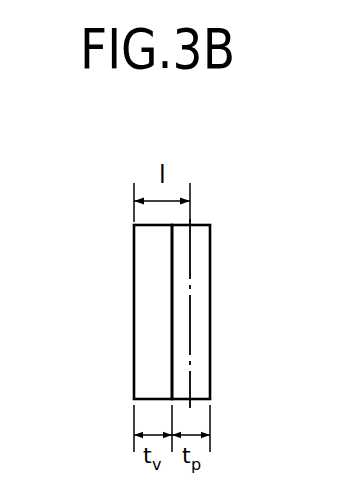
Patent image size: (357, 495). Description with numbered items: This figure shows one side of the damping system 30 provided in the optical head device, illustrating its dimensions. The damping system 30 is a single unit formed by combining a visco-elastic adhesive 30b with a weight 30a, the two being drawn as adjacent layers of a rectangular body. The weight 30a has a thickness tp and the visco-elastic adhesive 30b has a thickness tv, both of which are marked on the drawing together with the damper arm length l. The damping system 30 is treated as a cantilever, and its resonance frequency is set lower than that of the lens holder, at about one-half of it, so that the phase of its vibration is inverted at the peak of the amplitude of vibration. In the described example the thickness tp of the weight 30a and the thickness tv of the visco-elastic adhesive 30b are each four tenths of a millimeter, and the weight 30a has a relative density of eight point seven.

The damping system 30 is at (170, 270).
The weight 30a is at (210, 300).
The visco-elastic adhesive 30b is at (133, 302).